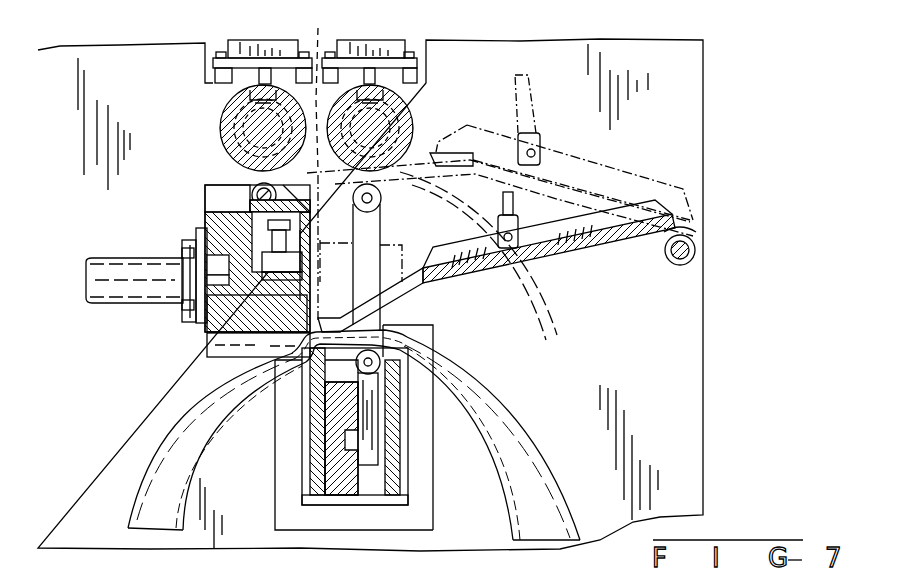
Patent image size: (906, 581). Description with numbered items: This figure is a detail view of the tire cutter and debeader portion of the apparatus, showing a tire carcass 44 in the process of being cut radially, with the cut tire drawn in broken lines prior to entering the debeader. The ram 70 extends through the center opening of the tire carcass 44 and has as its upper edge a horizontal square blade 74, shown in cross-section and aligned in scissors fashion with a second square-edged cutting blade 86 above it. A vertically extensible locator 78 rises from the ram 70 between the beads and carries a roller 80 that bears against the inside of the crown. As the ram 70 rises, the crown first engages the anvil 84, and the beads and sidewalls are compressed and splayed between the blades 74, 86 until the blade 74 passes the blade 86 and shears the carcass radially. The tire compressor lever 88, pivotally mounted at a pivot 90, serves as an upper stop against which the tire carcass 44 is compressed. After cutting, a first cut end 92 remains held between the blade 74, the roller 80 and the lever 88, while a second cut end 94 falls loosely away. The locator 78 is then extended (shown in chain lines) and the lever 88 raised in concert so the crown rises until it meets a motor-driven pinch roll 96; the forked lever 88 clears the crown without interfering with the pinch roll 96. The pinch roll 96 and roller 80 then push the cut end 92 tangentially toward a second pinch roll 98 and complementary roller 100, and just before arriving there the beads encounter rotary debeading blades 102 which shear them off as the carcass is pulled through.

The tire carcass 44 is at (537, 428).
The ram 70 is at (408, 456).
The horizontal square blade 74 is at (312, 388).
The vertically extensible locator 78 is at (380, 232).
The roller 80 is at (355, 202).
The anvil 84 is at (212, 344).
The second square-edged cutting blade 86 is at (270, 320).
The tire compressor lever 88 is at (452, 166).
The pivot 90 is at (680, 267).
The first cut end 92 is at (312, 312).
The second cut end 94 is at (292, 368).
The motor-driven pinch roll 96 is at (408, 120).
The second pinch roll 98 is at (222, 117).
The complementary roller 100 is at (252, 190).
The rotary debeading blades 102 is at (205, 222).